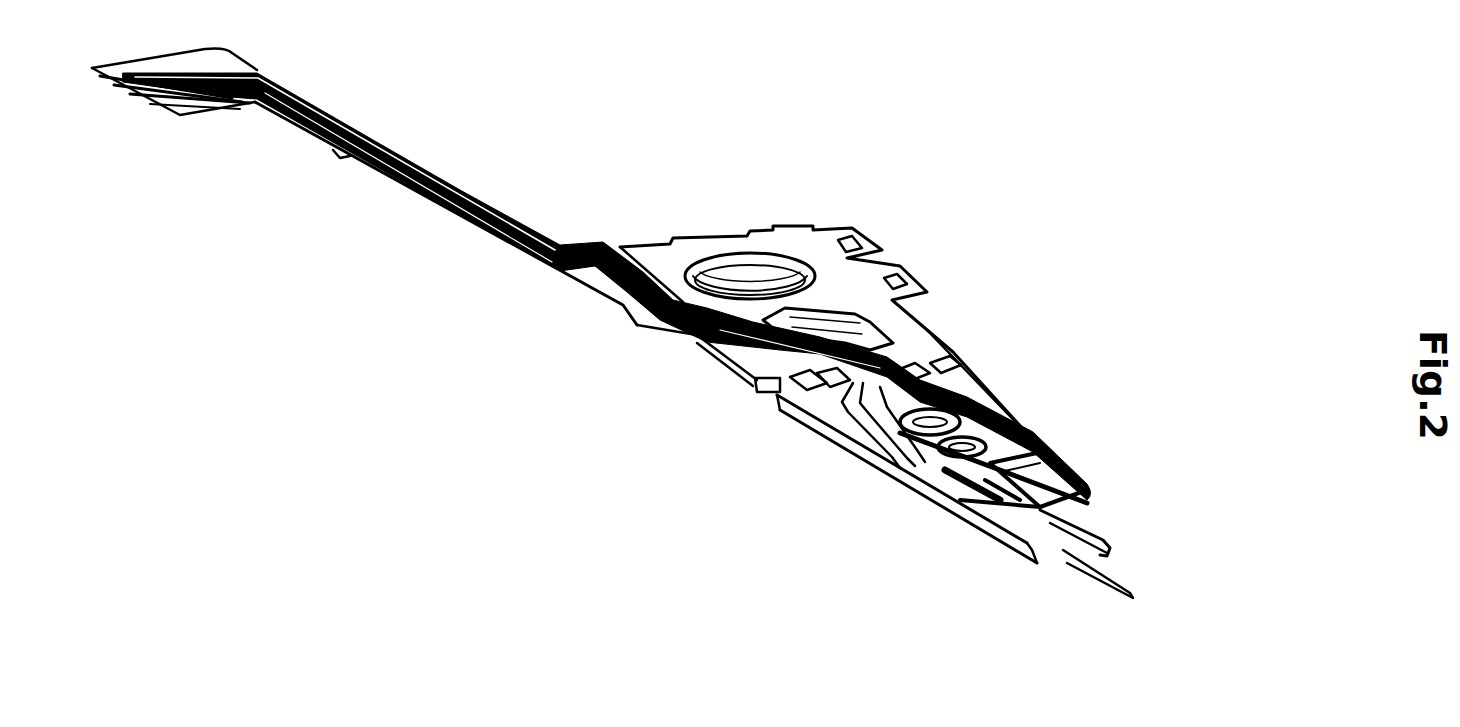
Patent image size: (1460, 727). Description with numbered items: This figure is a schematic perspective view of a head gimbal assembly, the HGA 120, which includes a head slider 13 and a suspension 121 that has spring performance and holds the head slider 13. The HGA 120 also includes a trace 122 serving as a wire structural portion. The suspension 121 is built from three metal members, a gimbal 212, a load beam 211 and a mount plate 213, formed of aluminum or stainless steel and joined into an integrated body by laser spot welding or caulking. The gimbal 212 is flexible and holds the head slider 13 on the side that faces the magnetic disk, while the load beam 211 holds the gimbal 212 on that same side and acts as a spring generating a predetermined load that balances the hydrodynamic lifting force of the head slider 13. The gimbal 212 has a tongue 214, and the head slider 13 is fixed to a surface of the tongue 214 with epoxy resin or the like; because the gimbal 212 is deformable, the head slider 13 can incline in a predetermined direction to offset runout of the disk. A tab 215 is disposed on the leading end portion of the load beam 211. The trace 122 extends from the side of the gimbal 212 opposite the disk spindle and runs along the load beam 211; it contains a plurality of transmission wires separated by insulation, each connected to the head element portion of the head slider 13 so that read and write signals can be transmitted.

The HGA 120 is at (980, 96).
The suspension 121 is at (955, 299).
The trace 122 is at (462, 190).
The load beam 211 is at (983, 392).
The gimbal 212 is at (1040, 440).
The mount plate 213 is at (745, 378).
The tongue 214 is at (948, 507).
The tab 215 is at (1130, 605).
The head slider 13 is at (990, 511).